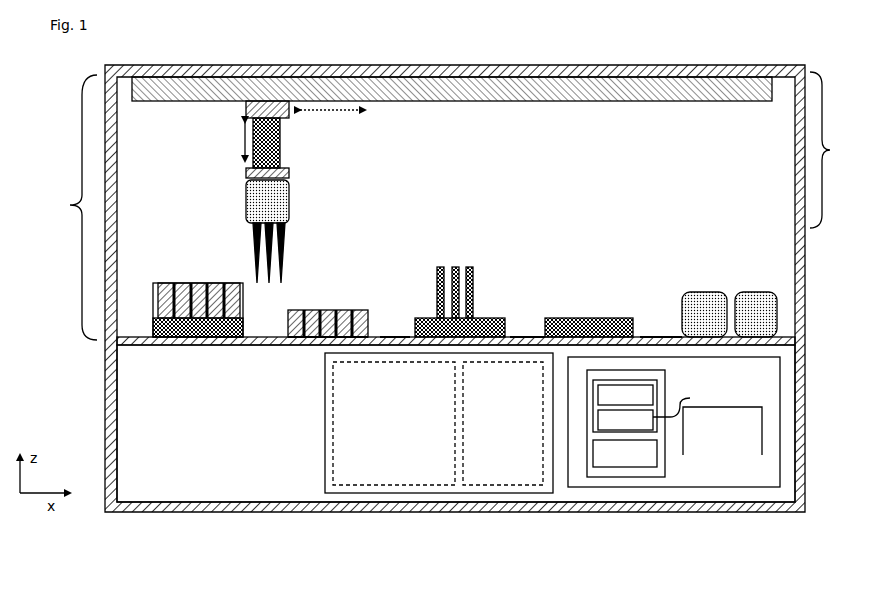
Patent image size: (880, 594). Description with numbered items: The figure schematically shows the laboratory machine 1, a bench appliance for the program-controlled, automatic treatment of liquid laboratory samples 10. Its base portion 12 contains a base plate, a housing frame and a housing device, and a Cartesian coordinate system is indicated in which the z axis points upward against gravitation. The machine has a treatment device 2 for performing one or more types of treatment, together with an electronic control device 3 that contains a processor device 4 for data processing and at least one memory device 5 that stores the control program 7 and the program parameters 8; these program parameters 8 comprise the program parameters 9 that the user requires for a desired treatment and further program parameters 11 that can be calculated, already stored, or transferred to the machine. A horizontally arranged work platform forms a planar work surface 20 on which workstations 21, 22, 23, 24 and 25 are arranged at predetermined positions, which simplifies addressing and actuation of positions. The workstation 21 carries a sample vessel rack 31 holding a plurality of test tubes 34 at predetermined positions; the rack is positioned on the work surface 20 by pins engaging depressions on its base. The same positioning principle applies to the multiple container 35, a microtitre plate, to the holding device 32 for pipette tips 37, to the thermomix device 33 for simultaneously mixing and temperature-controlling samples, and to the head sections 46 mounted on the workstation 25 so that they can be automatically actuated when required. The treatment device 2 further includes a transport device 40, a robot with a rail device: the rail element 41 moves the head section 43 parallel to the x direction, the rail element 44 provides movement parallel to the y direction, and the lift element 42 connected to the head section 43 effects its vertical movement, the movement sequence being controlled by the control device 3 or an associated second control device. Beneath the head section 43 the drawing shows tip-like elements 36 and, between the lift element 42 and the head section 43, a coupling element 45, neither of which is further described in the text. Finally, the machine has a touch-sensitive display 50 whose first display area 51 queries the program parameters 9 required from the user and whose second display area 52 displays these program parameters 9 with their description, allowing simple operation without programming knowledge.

The laboratory machine 1 is at (815, 532).
The treatment device 2 is at (70, 207).
The electronic control device 3 is at (678, 487).
The processor device 4 is at (762, 433).
The memory device 5 is at (655, 477).
The control program 7 is at (638, 467).
The program parameters 8 is at (657, 384).
The program parameters 9 is at (657, 393).
The liquid laboratory samples 10 is at (158, 308).
The further program parameters 11 is at (690, 398).
The base portion 12 is at (757, 64).
The work surface 20 is at (790, 337).
The workstation 21 is at (197, 345).
The workstation 22 is at (300, 347).
The workstation 23 is at (395, 337).
The workstation 24 is at (540, 337).
The workstation 25 is at (680, 337).
The sample vessel rack 31 is at (265, 343).
The holding device for pipette tips 32 is at (487, 318).
The thermomix device 33 is at (582, 318).
The test tubes 34 is at (165, 283).
The multiple container 35 is at (352, 310).
The pipette tips 36 is at (288, 257).
The pipette tips 37 is at (465, 267).
The transport device 40 is at (834, 150).
The rail element 41 is at (430, 97).
The lift element 42 is at (283, 140).
The head section 43 is at (289, 205).
The rail element 44 is at (246, 108).
The coupling 45 is at (246, 172).
The head sections 46 is at (757, 292).
The display 50 is at (320, 485).
The first display area 51 is at (398, 480).
The second display area 52 is at (505, 475).